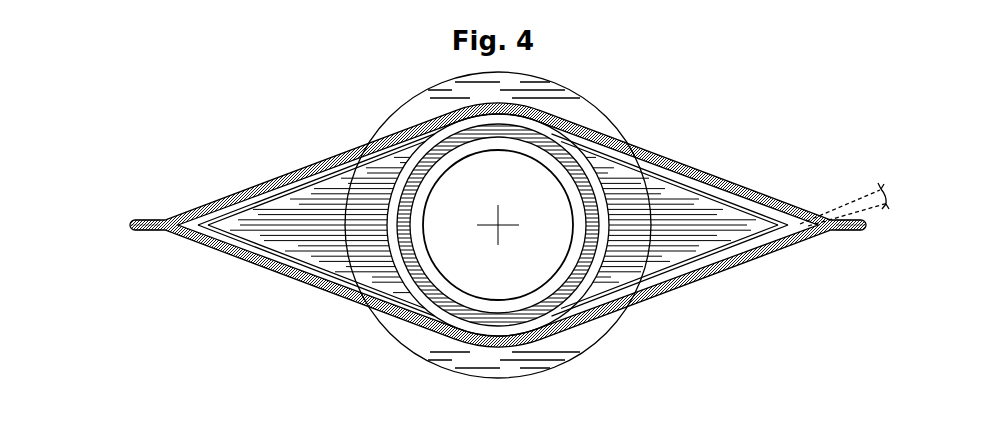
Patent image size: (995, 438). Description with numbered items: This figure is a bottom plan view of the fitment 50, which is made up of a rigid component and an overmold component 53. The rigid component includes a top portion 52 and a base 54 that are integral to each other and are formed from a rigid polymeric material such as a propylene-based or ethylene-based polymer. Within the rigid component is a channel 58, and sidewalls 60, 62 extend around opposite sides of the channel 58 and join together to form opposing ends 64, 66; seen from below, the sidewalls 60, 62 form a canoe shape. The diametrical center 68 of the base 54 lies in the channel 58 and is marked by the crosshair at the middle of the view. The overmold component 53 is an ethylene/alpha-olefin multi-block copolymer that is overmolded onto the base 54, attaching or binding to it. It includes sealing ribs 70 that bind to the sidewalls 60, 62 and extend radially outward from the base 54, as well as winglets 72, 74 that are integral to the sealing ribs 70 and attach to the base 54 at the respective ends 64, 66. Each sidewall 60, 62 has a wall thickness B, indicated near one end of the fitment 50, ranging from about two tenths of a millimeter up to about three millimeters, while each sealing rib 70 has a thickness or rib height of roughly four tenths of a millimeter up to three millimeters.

The fitment 50 is at (777, 110).
The top portion 52 is at (390, 98).
The overmold component 53 is at (255, 184).
The base 54 is at (806, 174).
The channel 58 is at (521, 178).
The sidewall 60 is at (312, 170).
The sidewall 62 is at (287, 261).
The end 64 is at (124, 229).
The end 66 is at (878, 229).
The diametrical center 68 is at (505, 230).
The sealing ribs 70 is at (666, 152).
The winglet 72 is at (141, 231).
The winglet 74 is at (857, 233).
The wall thickness B is at (895, 192).